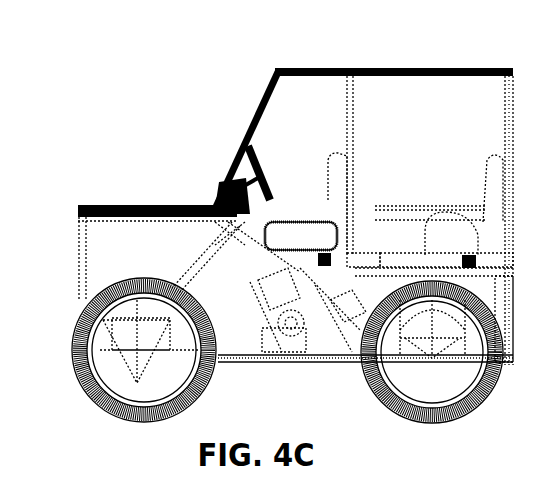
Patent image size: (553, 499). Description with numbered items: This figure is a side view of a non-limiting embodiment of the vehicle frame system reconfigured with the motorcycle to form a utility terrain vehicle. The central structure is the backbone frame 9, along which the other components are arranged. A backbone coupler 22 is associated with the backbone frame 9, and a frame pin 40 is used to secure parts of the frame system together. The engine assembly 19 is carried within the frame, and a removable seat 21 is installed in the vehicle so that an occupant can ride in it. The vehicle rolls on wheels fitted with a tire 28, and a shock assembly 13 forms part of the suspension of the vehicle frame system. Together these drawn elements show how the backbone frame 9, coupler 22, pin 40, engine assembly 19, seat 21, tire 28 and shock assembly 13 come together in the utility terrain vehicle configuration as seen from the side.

The backbone frame 9 is at (452, 240).
The shock assembly 13 is at (432, 355).
The engine assembly 19 is at (268, 292).
The removable seat 21 is at (337, 192).
The backbone coupler 22 is at (375, 212).
The tire 28 is at (73, 330).
The frame pin 40 is at (447, 258).